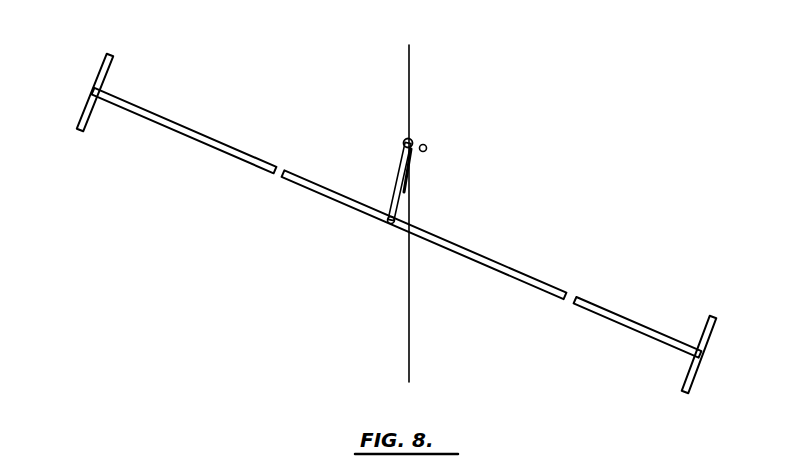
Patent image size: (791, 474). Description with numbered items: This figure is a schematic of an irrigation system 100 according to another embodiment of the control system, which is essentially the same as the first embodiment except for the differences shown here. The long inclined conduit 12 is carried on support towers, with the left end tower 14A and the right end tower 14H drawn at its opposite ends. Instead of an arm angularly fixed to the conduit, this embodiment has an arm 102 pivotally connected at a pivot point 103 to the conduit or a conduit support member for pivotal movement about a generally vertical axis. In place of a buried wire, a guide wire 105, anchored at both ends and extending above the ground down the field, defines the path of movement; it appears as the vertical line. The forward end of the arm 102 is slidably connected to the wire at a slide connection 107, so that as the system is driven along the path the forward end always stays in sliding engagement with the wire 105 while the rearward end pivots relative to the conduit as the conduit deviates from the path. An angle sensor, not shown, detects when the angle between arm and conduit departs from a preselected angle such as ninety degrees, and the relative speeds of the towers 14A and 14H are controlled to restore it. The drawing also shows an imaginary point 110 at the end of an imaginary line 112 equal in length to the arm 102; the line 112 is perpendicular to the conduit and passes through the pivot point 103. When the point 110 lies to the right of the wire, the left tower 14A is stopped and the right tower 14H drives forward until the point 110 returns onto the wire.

The irrigation system 100 is at (390, 224).
The elongated shaft 12 is at (294, 184).
The left end tower 14A is at (78, 120).
The right end tower 14H is at (709, 333).
The arm 102 is at (396, 153).
The pivot point 103 is at (388, 226).
The wire 105 is at (408, 327).
The slide connection 107 is at (411, 140).
The imaginary point 110 is at (427, 148).
The imaginary line 112 is at (413, 154).